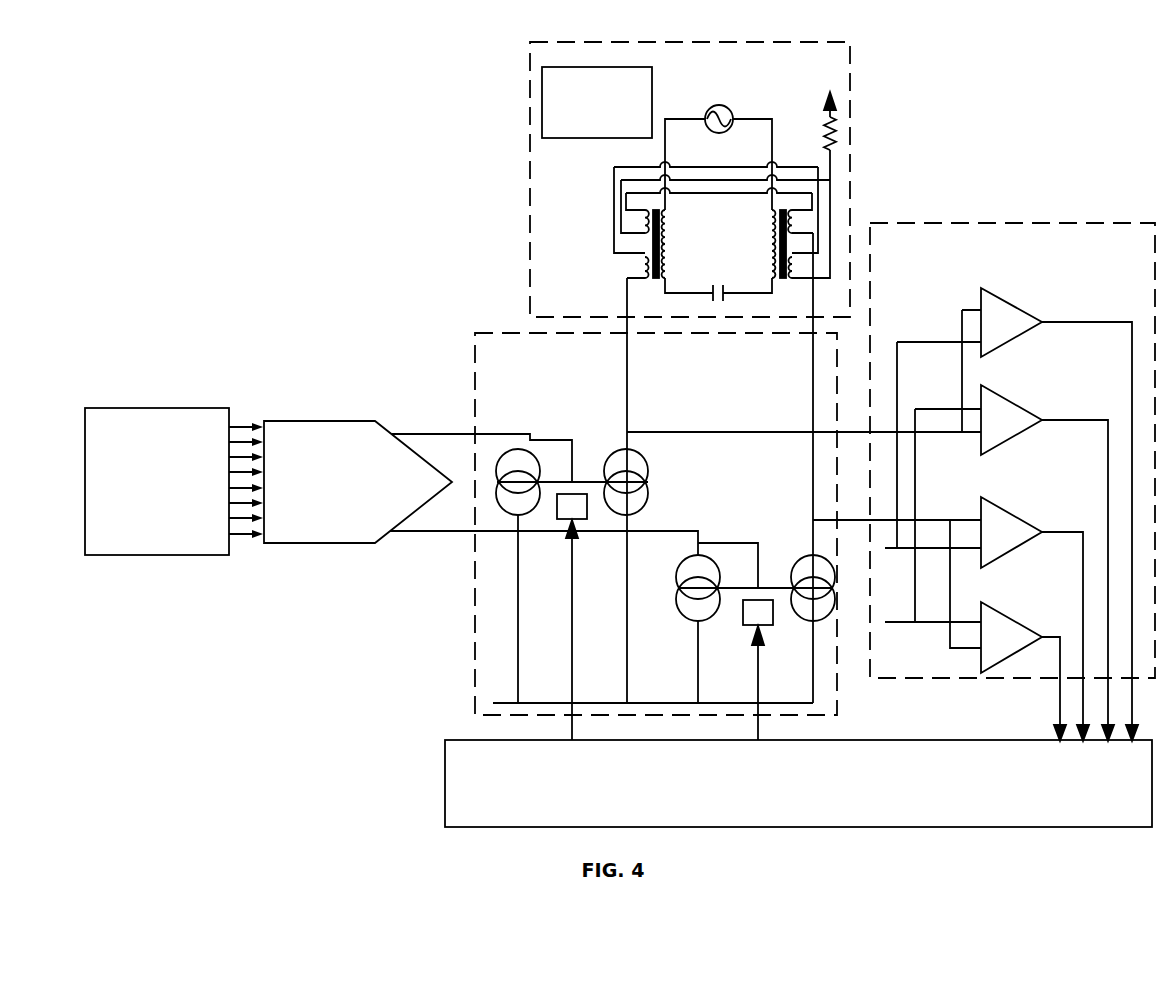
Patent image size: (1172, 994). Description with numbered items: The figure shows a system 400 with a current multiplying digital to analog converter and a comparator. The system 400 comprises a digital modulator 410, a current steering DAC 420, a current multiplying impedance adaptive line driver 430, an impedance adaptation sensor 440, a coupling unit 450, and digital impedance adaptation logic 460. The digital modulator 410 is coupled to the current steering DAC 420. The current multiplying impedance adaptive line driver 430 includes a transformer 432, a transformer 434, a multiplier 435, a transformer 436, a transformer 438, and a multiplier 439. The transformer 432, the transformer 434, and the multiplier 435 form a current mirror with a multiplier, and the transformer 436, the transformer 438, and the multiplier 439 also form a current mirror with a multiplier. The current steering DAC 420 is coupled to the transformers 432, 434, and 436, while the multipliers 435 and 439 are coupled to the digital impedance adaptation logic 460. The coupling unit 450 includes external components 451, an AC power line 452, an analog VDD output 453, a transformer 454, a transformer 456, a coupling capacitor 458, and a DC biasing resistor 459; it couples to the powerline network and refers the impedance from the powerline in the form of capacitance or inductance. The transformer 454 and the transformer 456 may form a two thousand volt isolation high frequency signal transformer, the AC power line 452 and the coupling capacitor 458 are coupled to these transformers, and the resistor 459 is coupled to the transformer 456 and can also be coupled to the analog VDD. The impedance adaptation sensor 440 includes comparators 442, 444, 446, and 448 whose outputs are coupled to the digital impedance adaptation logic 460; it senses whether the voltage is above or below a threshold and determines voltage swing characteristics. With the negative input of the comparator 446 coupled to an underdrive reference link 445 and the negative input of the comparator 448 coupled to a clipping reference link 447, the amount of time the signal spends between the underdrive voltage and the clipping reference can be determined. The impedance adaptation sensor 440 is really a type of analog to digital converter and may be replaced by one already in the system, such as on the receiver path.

The system 400 is at (152, 156).
The digital modulator 410 is at (140, 515).
The current steering DAC 420 is at (315, 530).
The current multiplying impedance adaptive line driver 430 is at (691, 417).
The transformer 432 is at (503, 508).
The transformer 434 is at (648, 463).
The multiplier 435 is at (580, 519).
The transformer 436 is at (676, 590).
The transformer 438 is at (803, 622).
The multiplier 439 is at (743, 625).
The impedance adaptation sensor 440 is at (1051, 284).
The comparator 442 is at (1022, 333).
The comparator 444 is at (1022, 432).
The underdrive reference link 445 is at (887, 550).
The comparator 446 is at (1017, 547).
The clipping reference link 447 is at (913, 624).
The comparator 448 is at (987, 668).
The coupling unit 450 is at (746, 90).
The external components 451 is at (580, 133).
The AC power line 452 is at (732, 129).
The analog VDD output 453 is at (836, 96).
The transformer 454 is at (667, 199).
The transformer 456 is at (770, 199).
The coupling capacitor 458 is at (729, 290).
The DC biasing resistor 459 is at (836, 132).
The digital impedance adaptation logic 460 is at (986, 793).